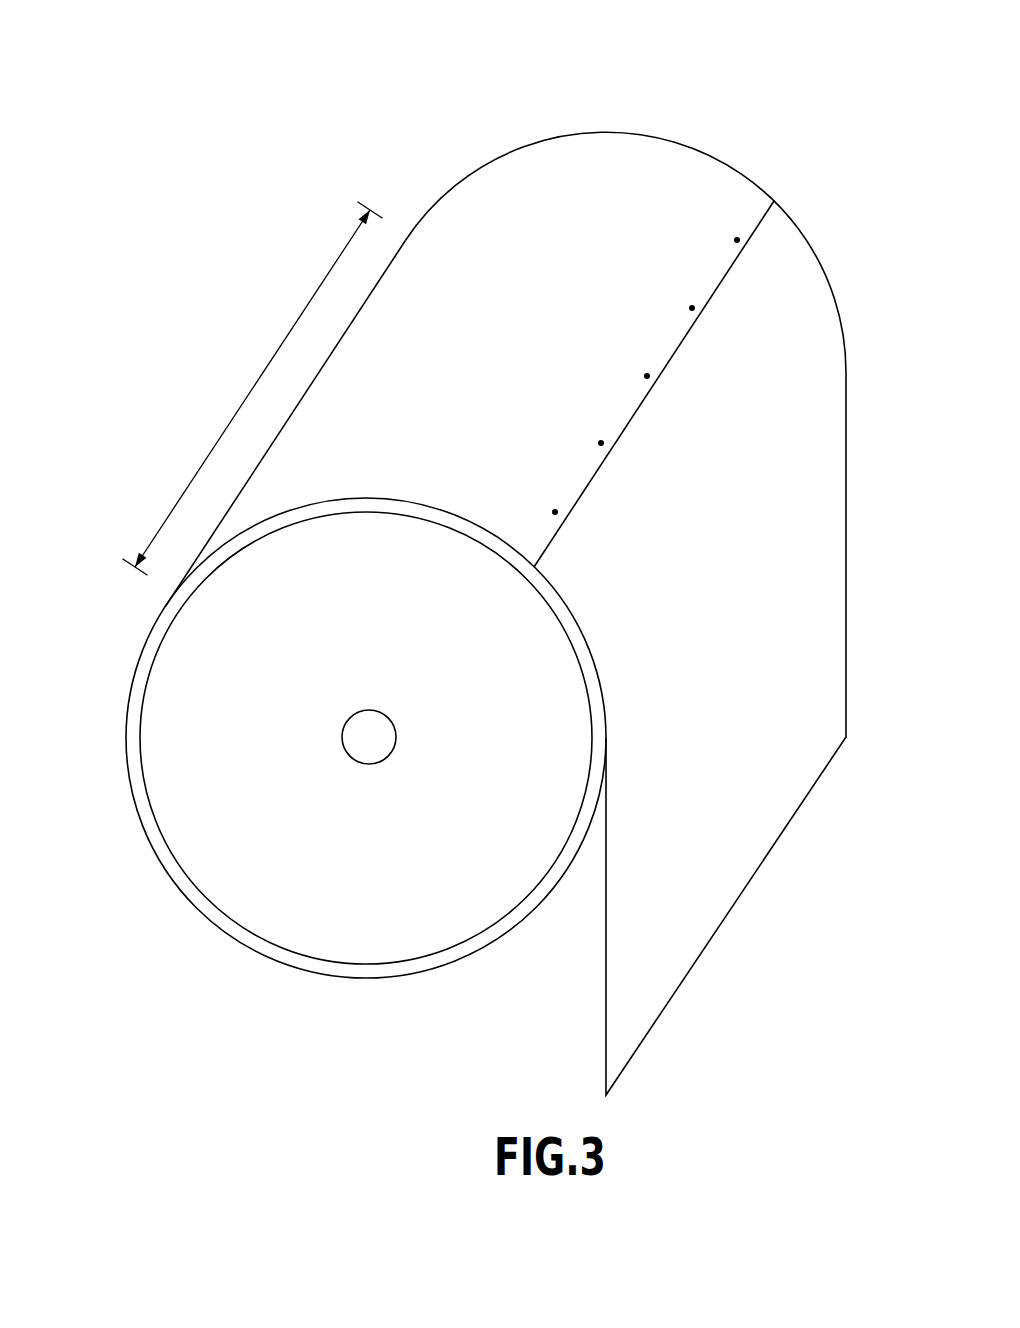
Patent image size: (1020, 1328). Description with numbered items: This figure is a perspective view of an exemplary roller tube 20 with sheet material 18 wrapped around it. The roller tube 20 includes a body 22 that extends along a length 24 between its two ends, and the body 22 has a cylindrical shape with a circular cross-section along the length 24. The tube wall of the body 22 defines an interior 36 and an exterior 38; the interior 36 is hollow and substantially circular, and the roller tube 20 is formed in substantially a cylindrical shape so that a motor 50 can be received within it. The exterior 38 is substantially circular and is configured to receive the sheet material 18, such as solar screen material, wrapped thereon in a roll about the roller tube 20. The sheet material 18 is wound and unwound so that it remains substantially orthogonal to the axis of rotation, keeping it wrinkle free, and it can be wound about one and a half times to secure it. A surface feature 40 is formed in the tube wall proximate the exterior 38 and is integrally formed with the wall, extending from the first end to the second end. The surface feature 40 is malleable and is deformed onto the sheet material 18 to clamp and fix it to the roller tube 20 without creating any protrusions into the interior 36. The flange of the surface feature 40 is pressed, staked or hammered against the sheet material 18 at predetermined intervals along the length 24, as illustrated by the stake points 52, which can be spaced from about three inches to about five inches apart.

The sheet material 18 is at (794, 534).
The roller tube 20 is at (526, 86).
The body 22 is at (132, 797).
The length 24 is at (281, 343).
The interior 36 is at (241, 939).
The exterior 38 is at (395, 1037).
The surface feature 40 is at (688, 289).
The motor 50 is at (269, 658).
The stake points 52 is at (647, 376).